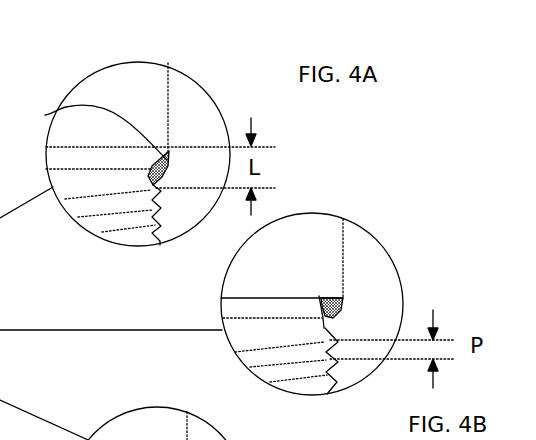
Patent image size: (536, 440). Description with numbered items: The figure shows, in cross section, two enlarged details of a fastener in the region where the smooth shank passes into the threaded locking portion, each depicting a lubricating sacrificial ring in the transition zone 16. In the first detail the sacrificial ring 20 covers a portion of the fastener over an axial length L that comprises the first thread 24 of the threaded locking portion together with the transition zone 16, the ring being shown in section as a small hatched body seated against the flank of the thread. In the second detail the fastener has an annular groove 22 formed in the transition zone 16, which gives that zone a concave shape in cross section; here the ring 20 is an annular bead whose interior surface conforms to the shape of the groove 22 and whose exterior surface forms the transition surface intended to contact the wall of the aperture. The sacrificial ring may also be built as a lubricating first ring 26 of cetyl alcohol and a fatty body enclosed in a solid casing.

In FIG. 4A, the transition zone 16 is at (45, 115).
In FIG. 4A, the sacrificial ring 20 is at (166, 166).
In FIG. 4B, the sacrificial ring 20 is at (342, 313).
In FIG. 4B, the annular groove 22 is at (319, 296).
In FIG. 4A, the first thread 24 is at (138, 192).
In FIG. 4B, the lubricating first ring 26 is at (210, 439).